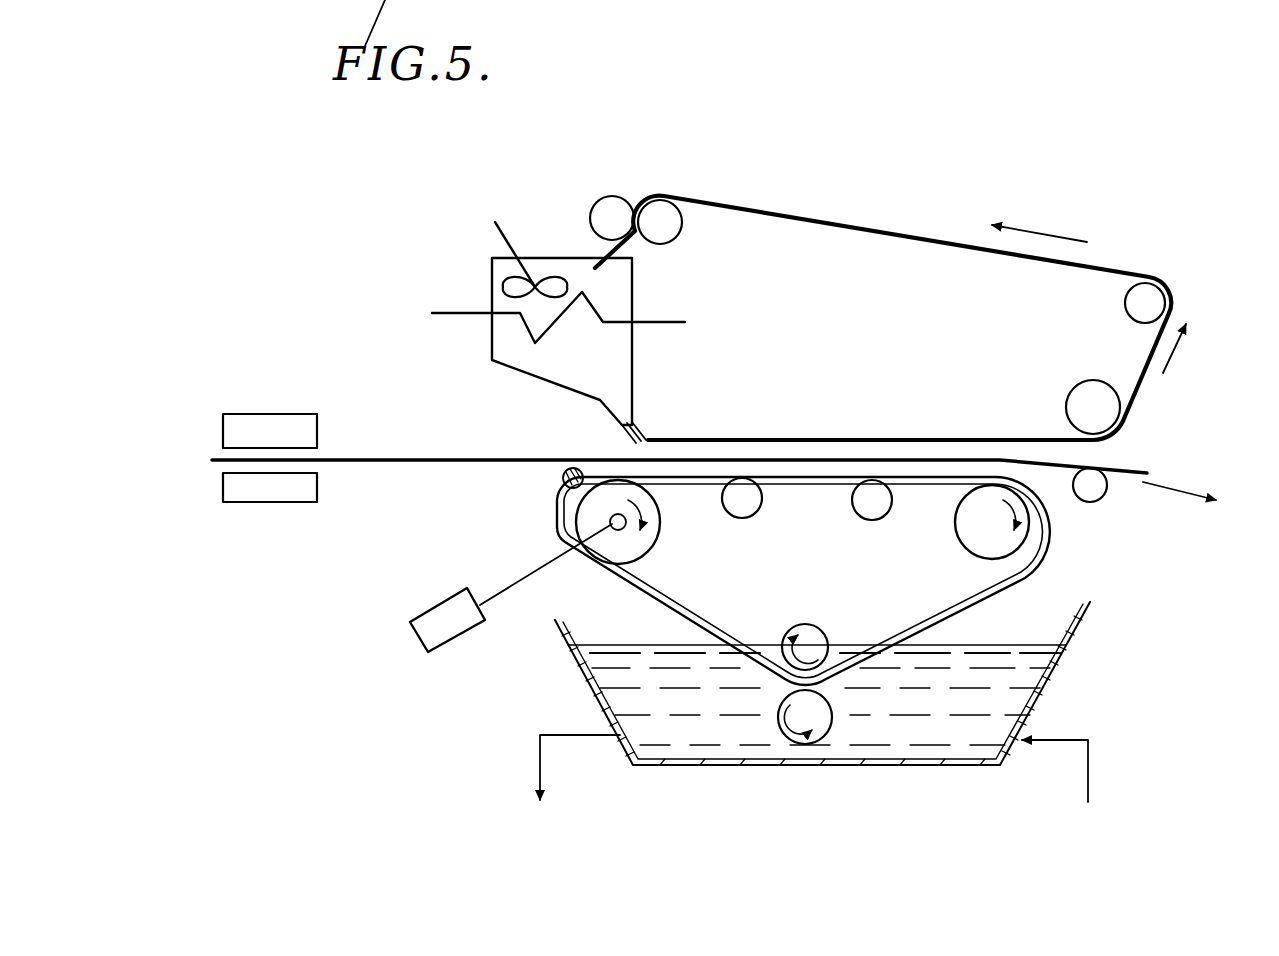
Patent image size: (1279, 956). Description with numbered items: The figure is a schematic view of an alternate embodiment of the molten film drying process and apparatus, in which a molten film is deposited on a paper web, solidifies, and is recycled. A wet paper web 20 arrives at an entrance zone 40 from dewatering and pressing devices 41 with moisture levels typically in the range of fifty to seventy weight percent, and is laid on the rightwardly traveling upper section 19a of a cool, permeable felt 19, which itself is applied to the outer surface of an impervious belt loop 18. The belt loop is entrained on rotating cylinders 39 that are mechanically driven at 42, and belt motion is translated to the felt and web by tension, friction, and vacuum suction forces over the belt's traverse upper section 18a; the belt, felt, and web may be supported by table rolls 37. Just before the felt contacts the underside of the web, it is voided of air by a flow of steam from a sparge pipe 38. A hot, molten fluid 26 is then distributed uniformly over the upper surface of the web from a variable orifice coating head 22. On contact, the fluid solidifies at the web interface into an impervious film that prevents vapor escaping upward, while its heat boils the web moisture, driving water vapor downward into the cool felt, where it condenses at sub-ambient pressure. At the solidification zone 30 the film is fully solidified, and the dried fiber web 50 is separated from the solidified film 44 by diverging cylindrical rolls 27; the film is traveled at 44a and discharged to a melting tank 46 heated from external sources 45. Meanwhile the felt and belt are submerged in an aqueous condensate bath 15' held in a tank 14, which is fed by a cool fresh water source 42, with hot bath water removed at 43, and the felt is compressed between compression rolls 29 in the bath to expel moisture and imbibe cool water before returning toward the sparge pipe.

The tank 14 is at (778, 770).
The cooling water tank 15' is at (781, 683).
The impervious belt loop 18 is at (1008, 586).
The traverse upper section of belt 18a is at (793, 480).
The permeable felt 19 is at (964, 600).
The upper section of felt 19a is at (918, 468).
The wet paper web 20 is at (348, 458).
The coating head 22 is at (622, 422).
The molten fluid 26 is at (646, 438).
The diverging cylindrical rolls 27 is at (1090, 390).
The compression rolls 29 is at (818, 714).
The solidification zone 30 is at (1030, 435).
The table rolls 37 is at (723, 508).
The sparge pipe 38 is at (560, 482).
The rotating cylinders 39 is at (600, 525).
The entrance zone 40 is at (620, 442).
The dewatering and pressing devices 41 is at (238, 505).
The mechanical drive / cool fresh water source 42 is at (410, 636).
The hot bath water removal 43 is at (540, 809).
The solidified film 44 is at (1147, 377).
The film travel path 44a is at (866, 226).
The external heat sources 45 is at (351, 312).
The melting tank 46 is at (633, 272).
The dried fiber web 50 is at (1133, 463).